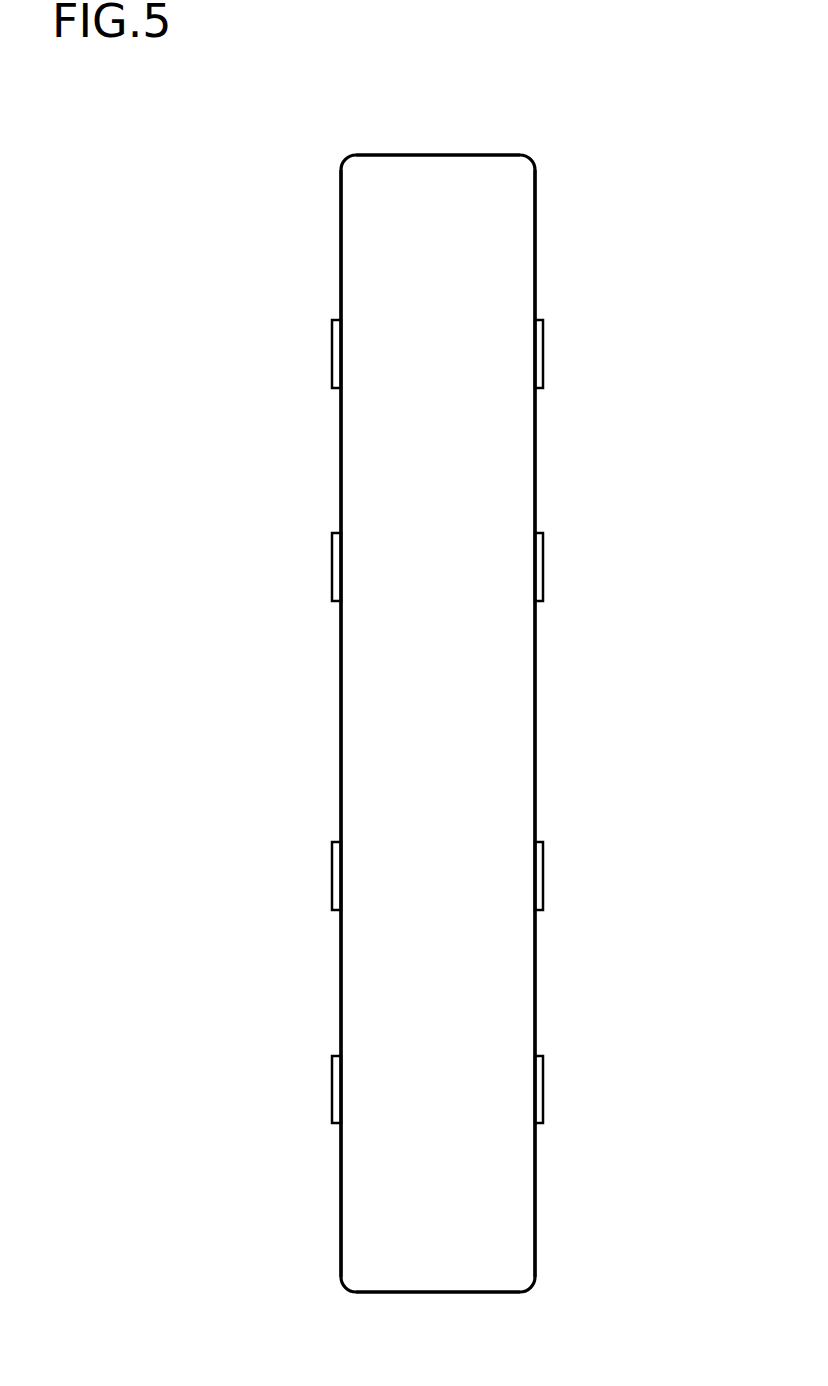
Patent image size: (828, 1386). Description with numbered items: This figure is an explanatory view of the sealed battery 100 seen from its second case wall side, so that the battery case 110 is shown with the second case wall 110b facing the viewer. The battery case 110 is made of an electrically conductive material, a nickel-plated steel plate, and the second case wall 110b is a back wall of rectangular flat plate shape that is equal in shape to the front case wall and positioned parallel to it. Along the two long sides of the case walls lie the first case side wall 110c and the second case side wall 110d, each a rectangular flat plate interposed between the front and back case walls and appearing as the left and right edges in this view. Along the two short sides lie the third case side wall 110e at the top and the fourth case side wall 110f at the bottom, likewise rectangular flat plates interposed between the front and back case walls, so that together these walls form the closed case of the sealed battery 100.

The sealed battery 100 is at (597, 151).
The battery case 110 is at (463, 293).
The second case wall 110b is at (507, 972).
The first case side wall 110c is at (341, 714).
The second case side wall 110d is at (535, 695).
The third case side wall 110e is at (437, 155).
The fourth case side wall 110f is at (435, 1292).